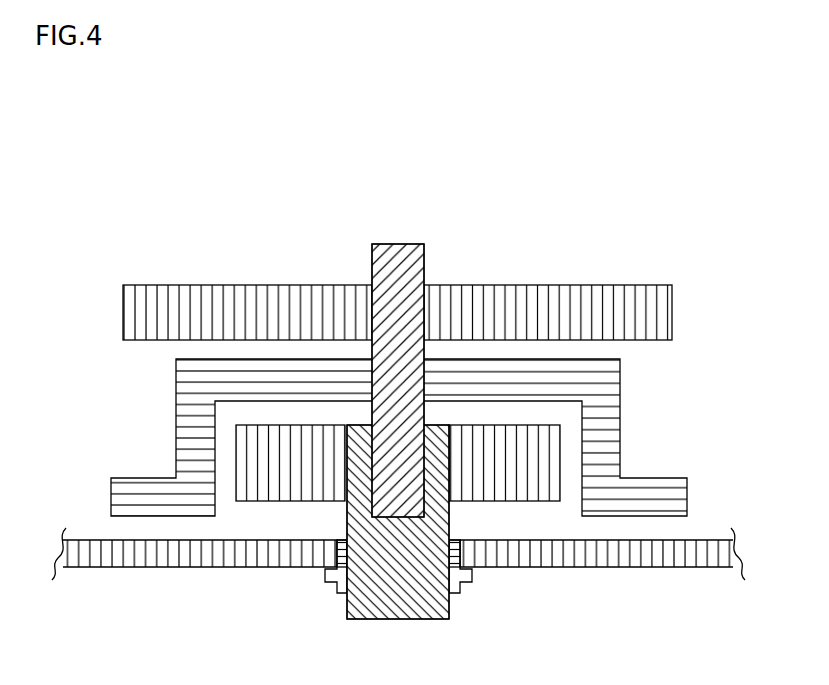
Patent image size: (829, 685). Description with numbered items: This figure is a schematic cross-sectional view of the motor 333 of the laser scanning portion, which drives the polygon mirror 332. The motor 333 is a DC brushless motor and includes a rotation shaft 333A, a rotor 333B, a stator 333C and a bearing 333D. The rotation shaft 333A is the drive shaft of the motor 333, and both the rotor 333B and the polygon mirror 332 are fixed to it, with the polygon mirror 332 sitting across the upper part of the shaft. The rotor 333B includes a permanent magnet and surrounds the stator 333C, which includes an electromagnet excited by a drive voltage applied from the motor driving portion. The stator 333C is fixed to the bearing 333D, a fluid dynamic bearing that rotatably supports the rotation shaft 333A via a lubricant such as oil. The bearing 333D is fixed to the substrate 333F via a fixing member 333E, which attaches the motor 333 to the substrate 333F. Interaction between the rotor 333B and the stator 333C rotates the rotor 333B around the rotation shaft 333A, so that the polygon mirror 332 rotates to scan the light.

The polygon mirror 332 is at (672, 310).
The motor 333 is at (594, 225).
The rotation shaft 333A is at (405, 244).
The rotor 333B is at (620, 405).
The stator 333C is at (302, 502).
The bearing 333D is at (449, 517).
The fixing member 333E is at (332, 570).
The substrate 333F is at (610, 568).